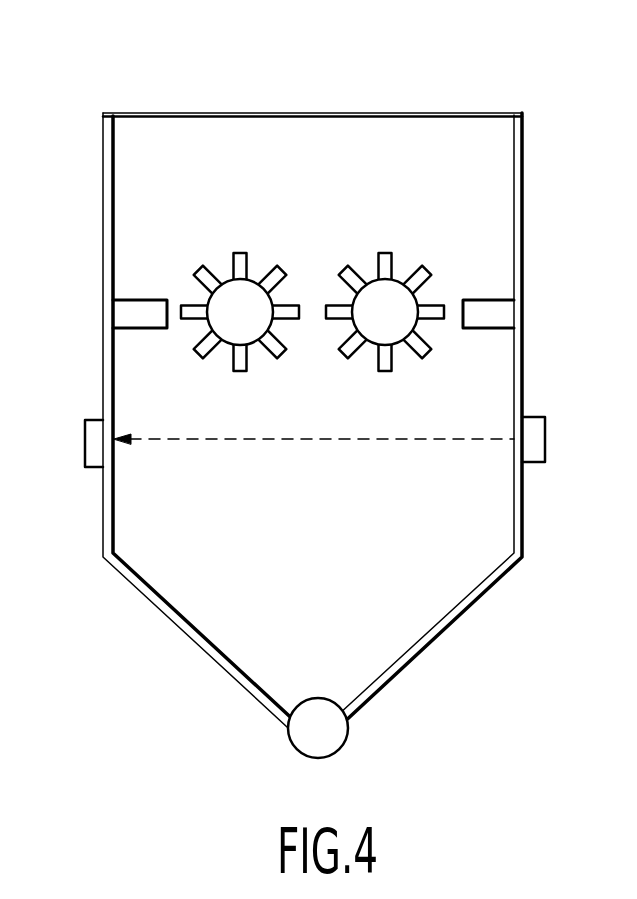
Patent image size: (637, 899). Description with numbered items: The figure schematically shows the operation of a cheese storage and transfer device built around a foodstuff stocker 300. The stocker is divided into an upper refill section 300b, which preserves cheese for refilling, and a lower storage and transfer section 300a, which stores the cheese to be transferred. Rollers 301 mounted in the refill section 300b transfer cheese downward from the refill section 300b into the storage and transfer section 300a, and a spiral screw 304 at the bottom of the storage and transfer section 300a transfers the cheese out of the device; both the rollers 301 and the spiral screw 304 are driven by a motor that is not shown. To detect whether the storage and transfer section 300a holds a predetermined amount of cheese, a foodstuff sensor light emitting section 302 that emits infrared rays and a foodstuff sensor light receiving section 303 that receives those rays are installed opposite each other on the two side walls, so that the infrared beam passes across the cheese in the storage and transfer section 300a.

The foodstuff stocker 300 is at (570, 66).
The storage and transfer section 300a is at (300, 531).
The refill section 300b is at (318, 180).
The rollers 301 is at (259, 281).
The foodstuff sensor light emitting section 302 is at (545, 418).
The foodstuff sensor light receiving section 303 is at (85, 420).
The spiral screw 304 is at (319, 698).